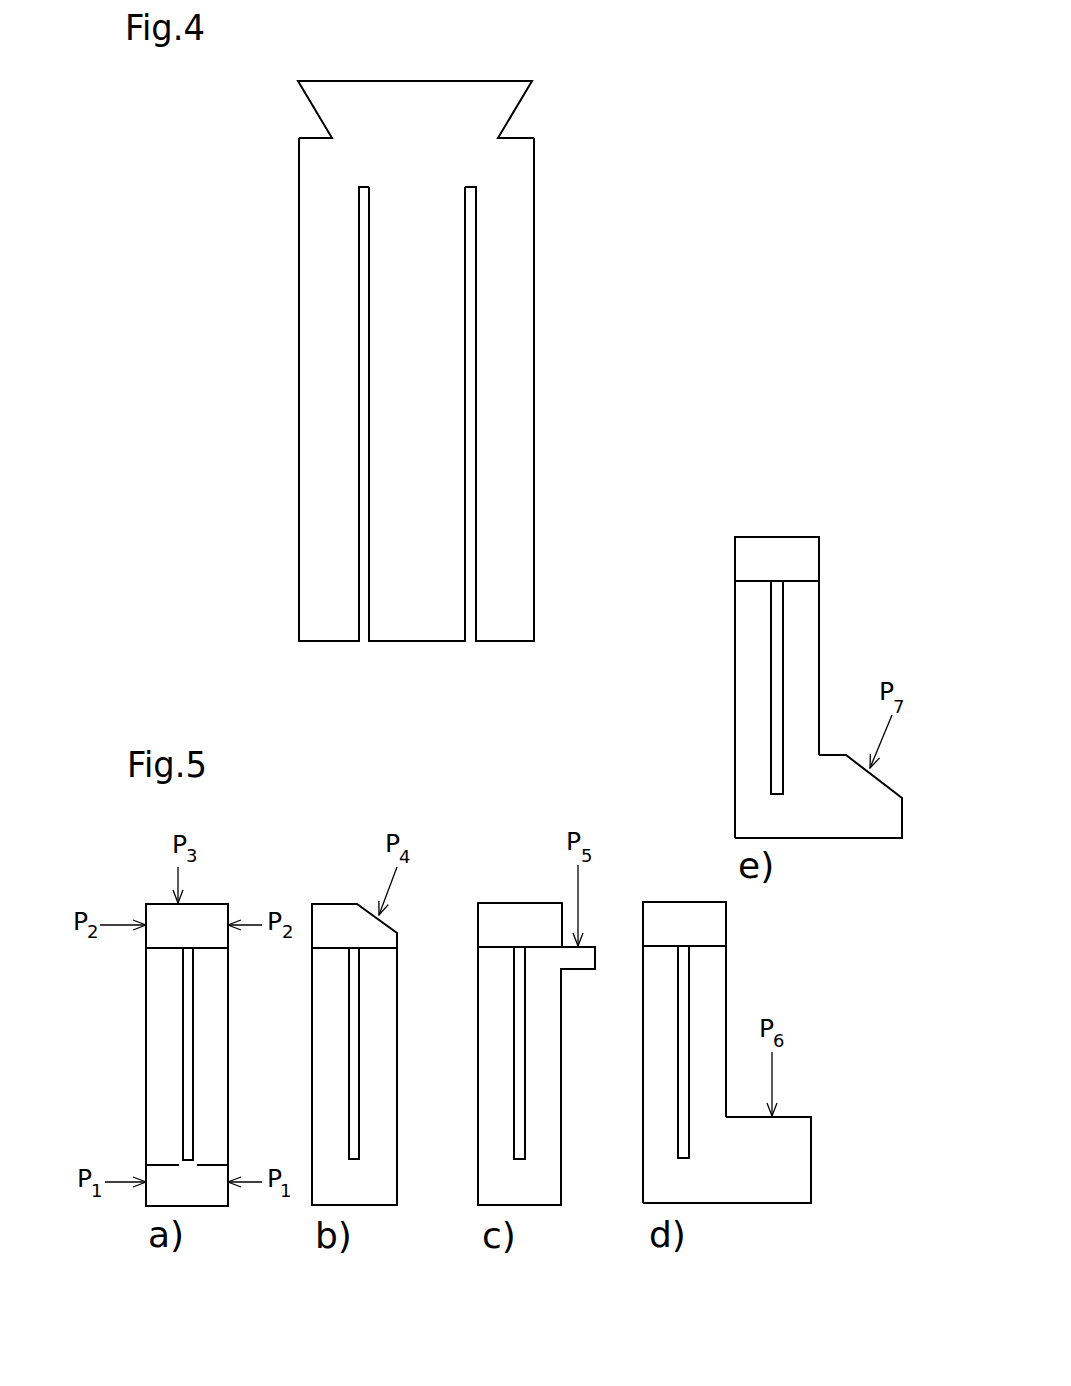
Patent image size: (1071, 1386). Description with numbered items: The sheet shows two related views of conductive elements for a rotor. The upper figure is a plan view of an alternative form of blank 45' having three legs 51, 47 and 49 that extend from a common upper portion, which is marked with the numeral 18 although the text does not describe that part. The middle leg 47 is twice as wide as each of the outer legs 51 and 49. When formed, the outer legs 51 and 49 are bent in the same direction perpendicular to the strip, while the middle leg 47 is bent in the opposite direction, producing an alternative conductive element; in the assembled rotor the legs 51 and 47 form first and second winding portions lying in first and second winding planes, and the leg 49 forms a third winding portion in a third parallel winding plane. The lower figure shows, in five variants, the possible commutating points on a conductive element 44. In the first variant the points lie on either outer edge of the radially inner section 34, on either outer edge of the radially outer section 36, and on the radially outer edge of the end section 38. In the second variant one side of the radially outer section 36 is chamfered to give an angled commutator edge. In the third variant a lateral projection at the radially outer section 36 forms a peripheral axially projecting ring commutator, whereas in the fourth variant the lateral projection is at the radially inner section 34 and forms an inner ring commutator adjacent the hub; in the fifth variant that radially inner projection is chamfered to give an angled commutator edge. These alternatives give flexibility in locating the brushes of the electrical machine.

In FIG. 4, the head of expansion anchor bolt 18 is at (403, 129).
In FIG. 4, the blank 45' is at (435, 397).
In FIG. 4, the middle leg 47 is at (422, 622).
In FIG. 4, the outer leg 49 is at (508, 450).
In FIG. 4, the outer leg 51 is at (318, 452).
In FIG. 5, the radially inner section 34 is at (840, 808).
In FIG. 5, the radially outer section 36 is at (174, 938).
In FIG. 5, the end section 38 is at (208, 908).
In FIG. 5, the conductive element 44 is at (146, 1057).